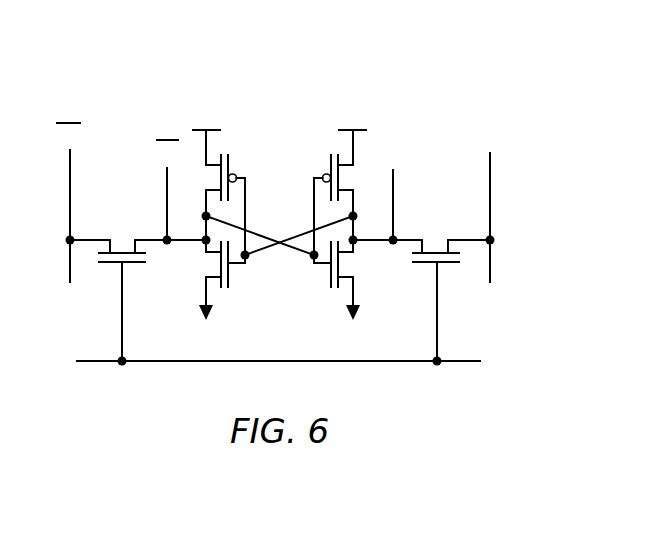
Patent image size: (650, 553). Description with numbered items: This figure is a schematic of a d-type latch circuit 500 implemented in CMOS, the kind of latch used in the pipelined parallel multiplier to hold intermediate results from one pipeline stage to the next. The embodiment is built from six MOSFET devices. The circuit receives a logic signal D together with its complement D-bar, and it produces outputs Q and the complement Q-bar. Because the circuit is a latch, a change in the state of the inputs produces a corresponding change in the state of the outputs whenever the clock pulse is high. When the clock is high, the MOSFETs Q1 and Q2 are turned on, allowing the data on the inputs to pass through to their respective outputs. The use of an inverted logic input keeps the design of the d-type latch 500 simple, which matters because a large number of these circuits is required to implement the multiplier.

The d-type latch circuit 500 is at (348, 57).
The MOSFET Q1 is at (127, 300).
The MOSFET Q2 is at (447, 300).